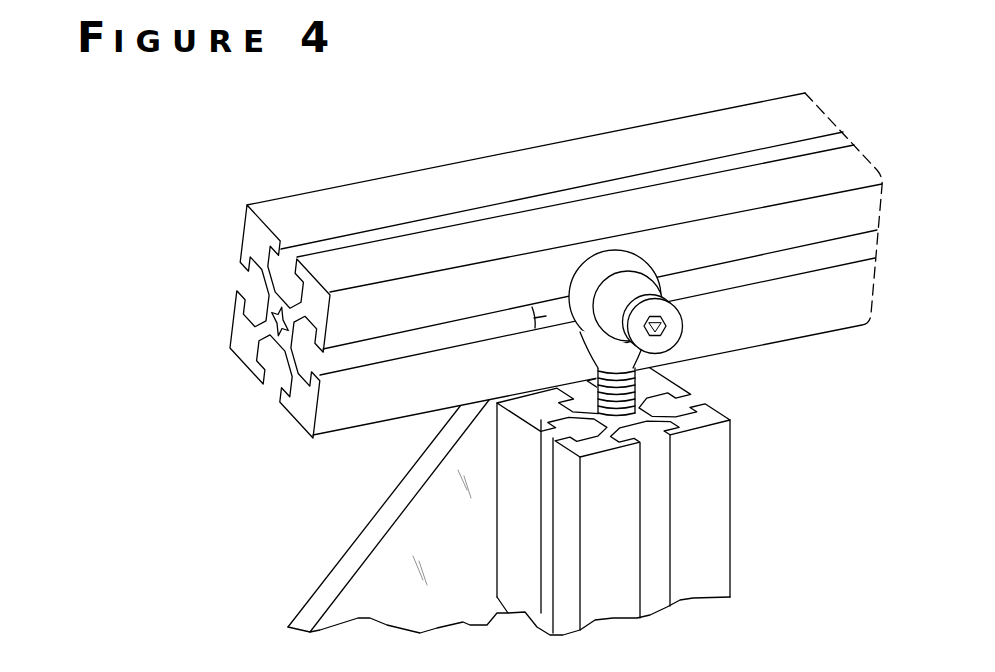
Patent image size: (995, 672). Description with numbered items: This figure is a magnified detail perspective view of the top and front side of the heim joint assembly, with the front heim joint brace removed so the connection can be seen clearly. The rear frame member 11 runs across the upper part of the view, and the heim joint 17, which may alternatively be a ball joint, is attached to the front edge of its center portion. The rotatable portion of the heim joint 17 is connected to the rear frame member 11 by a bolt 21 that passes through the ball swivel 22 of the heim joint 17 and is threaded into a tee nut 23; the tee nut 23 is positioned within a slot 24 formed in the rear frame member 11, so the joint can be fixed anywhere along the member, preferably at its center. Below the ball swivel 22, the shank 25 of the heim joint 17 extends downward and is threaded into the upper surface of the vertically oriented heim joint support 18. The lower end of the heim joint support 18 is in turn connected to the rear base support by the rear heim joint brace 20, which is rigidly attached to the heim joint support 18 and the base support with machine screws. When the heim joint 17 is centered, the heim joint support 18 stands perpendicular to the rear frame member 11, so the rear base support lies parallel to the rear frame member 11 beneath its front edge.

The rear frame member 11 is at (220, 216).
The heim joint 17 is at (563, 259).
The heim joint support 18 is at (705, 540).
The rear heim joint brace 20 is at (372, 578).
The bolt 21 is at (670, 311).
The ball swivel 22 is at (637, 276).
The tee nut 23 is at (532, 312).
The slot 24 is at (307, 361).
The shank 25 is at (665, 390).